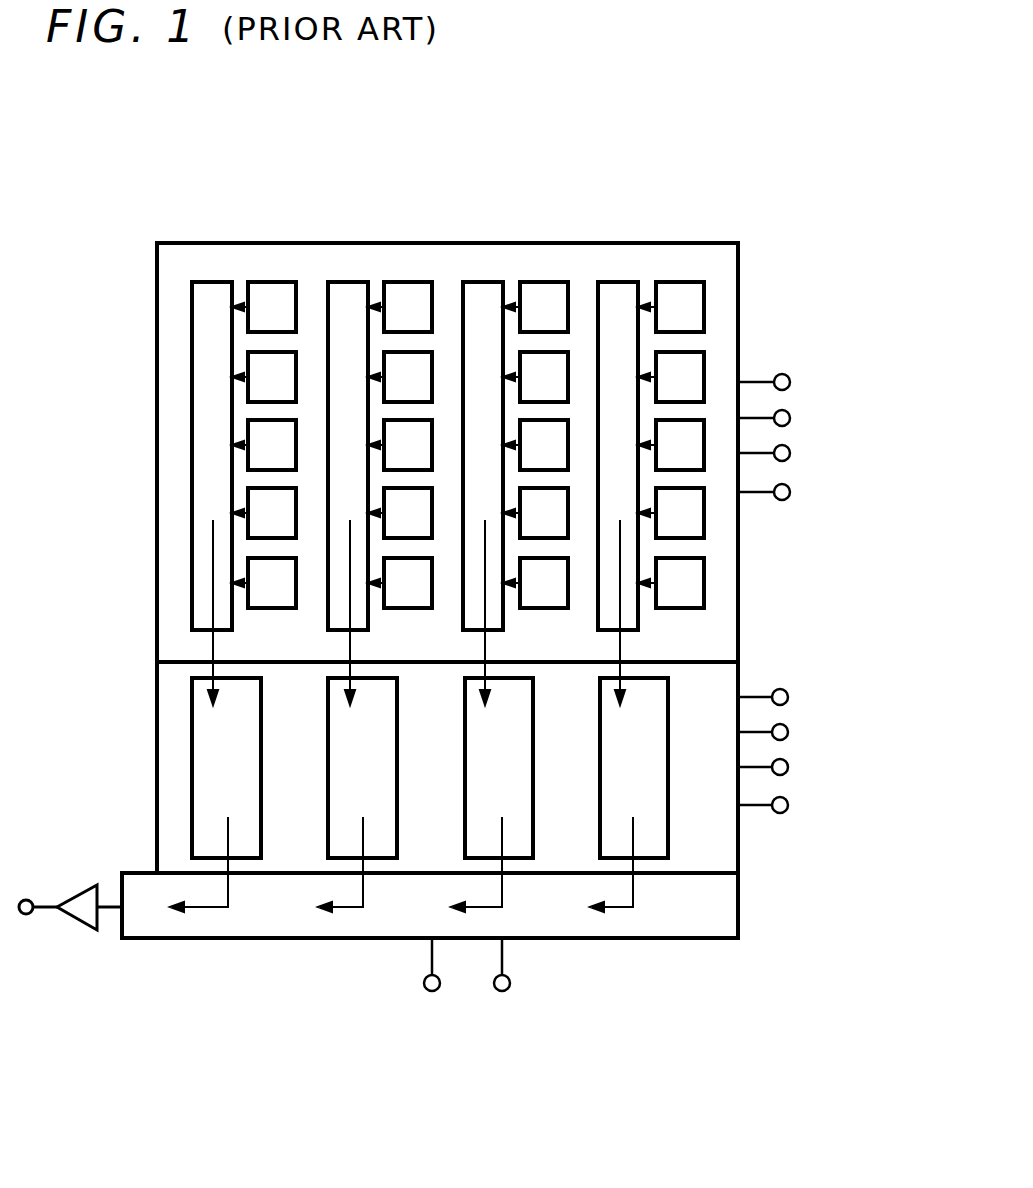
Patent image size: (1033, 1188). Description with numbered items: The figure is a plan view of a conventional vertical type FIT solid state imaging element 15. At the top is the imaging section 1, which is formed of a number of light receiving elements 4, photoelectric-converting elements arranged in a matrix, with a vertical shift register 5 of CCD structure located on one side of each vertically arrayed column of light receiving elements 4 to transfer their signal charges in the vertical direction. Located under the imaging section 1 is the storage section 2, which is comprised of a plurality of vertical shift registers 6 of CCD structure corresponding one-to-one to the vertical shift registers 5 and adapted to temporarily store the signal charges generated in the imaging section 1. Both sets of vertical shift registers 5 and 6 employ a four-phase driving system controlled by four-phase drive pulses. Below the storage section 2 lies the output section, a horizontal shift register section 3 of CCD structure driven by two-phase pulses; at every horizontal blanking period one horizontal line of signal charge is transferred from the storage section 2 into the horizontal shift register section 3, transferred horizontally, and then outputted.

The vertical type FIT solid state imaging element 15 is at (52, 273).
The imaging section 1 is at (157, 400).
The storage section 2 is at (157, 768).
The horizontal shift register section 3 is at (259, 940).
The light receiving elements 4 is at (280, 284).
The vertical shift register 5 is at (203, 284).
The vertical shift registers 6 is at (247, 770).